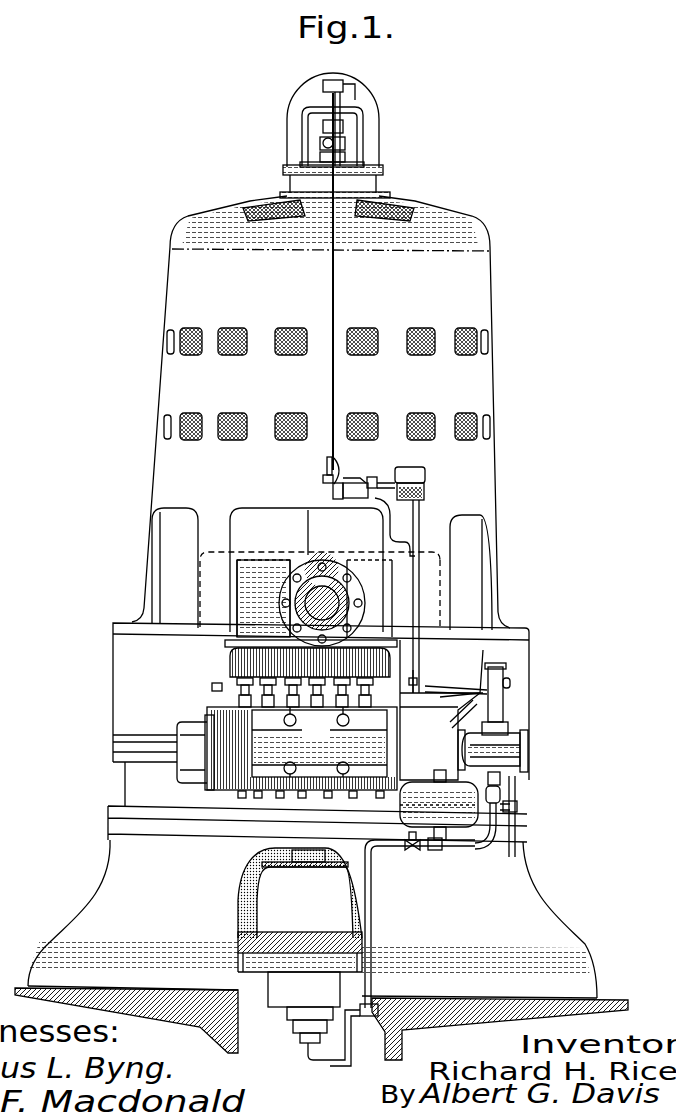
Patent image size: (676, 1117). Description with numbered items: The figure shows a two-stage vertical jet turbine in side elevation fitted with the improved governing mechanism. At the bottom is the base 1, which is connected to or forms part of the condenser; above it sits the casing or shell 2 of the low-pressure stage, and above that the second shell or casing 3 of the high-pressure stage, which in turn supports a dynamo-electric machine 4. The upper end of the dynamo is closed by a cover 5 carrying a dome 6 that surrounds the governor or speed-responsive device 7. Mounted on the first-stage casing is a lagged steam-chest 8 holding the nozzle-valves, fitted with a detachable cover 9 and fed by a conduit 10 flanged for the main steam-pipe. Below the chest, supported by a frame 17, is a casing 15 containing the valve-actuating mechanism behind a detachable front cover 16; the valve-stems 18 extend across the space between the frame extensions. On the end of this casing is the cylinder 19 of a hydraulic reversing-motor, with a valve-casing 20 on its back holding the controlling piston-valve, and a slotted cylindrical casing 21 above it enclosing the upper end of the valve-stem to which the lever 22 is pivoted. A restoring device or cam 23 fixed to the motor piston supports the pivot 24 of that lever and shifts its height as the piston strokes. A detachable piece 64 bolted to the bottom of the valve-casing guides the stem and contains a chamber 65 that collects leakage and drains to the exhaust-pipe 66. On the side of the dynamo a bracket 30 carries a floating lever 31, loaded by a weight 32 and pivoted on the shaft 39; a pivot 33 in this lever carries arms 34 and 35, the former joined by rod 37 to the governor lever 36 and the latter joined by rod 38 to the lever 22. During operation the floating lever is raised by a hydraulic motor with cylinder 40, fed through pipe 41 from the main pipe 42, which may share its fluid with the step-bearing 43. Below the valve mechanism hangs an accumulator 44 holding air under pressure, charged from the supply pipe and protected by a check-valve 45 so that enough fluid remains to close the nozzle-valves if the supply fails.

The base 1 is at (110, 860).
The casing or shell 2 is at (125, 782).
The second shell or casing 3 is at (122, 712).
The dynamo-electric machine 4 is at (160, 452).
The cover 5 is at (430, 212).
The dome 6 is at (375, 142).
The governor or speed-responsive device 7 is at (323, 128).
The steam-chest 8 is at (250, 596).
The detachable cover 9 is at (275, 566).
The conduit 10 is at (337, 578).
The casing 15 is at (205, 782).
The detachable front cover 16 is at (302, 752).
The frame 17 is at (230, 672).
The valve-stems 18 is at (237, 697).
The cylinder 19 is at (530, 750).
The valve-casing 20 is at (510, 728).
The slotted cylindrical casing 21 is at (505, 670).
The lever 22 is at (462, 688).
The restoring device or cam 23 is at (478, 708).
The pivot 24 is at (458, 705).
The bracket 30 is at (333, 498).
The floating lever 31 is at (352, 484).
The weight 32 is at (425, 471).
The pivot 33 is at (378, 480).
The arm 34 is at (323, 480).
The arm 35 is at (424, 499).
The lever of the governor 36 is at (323, 84).
The rod 37 is at (337, 303).
The rod 38 is at (425, 543).
The shaft 39 is at (327, 464).
The cylinder 40 is at (395, 527).
The pipe 41 is at (420, 589).
The main pipe 42 is at (382, 1018).
The step-bearing 43 is at (304, 1016).
The accumulator 44 is at (466, 842).
The check-valve 45 is at (411, 852).
The detachable piece 64 is at (500, 780).
The chamber 65 is at (500, 795).
The exhaust-pipe 66 is at (517, 806).